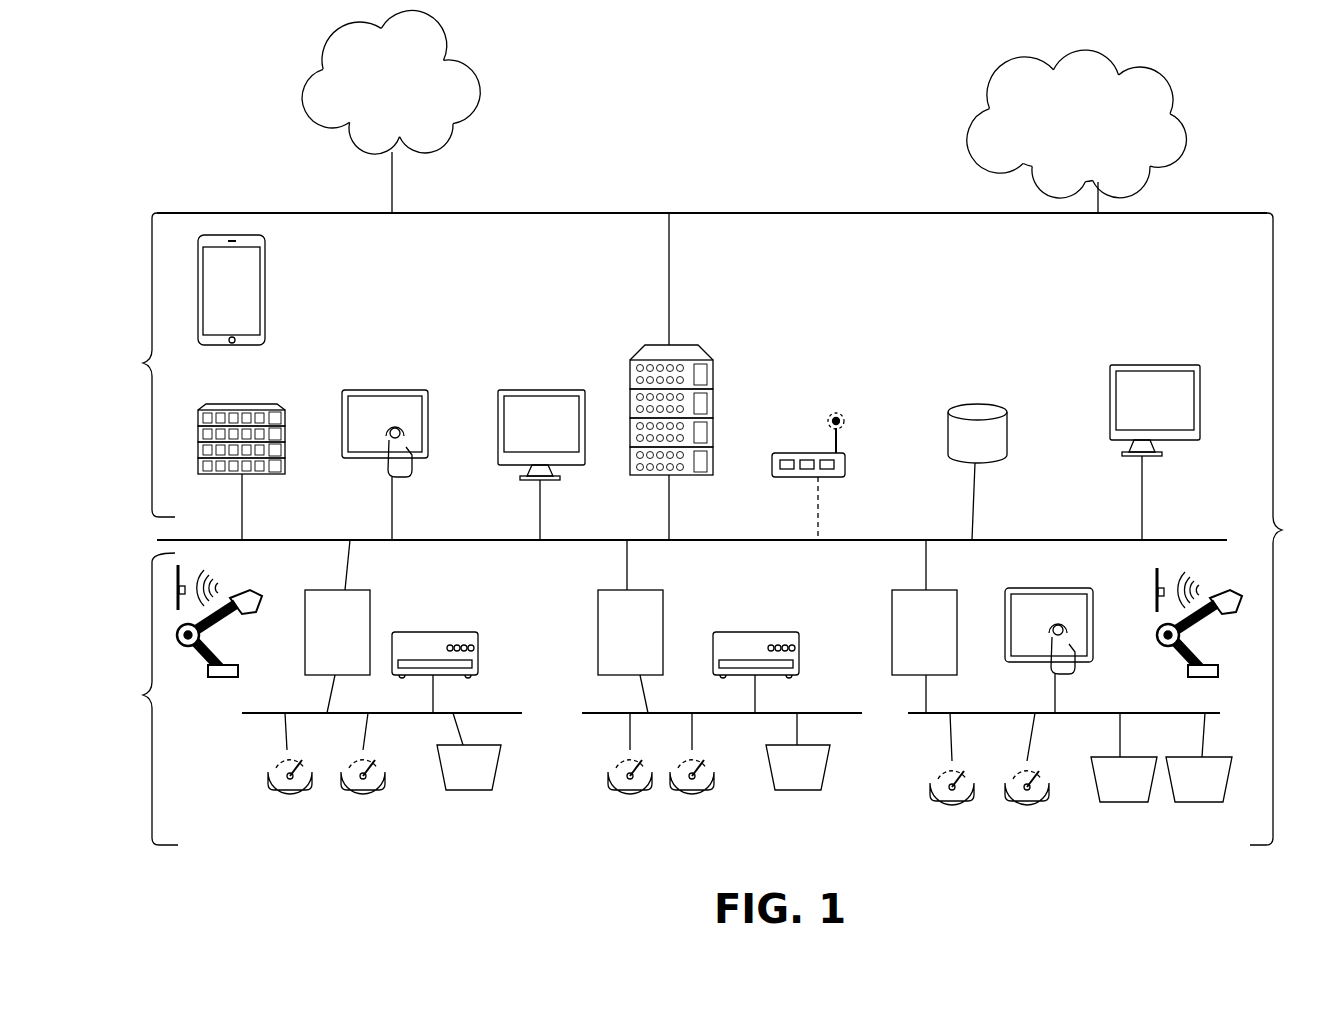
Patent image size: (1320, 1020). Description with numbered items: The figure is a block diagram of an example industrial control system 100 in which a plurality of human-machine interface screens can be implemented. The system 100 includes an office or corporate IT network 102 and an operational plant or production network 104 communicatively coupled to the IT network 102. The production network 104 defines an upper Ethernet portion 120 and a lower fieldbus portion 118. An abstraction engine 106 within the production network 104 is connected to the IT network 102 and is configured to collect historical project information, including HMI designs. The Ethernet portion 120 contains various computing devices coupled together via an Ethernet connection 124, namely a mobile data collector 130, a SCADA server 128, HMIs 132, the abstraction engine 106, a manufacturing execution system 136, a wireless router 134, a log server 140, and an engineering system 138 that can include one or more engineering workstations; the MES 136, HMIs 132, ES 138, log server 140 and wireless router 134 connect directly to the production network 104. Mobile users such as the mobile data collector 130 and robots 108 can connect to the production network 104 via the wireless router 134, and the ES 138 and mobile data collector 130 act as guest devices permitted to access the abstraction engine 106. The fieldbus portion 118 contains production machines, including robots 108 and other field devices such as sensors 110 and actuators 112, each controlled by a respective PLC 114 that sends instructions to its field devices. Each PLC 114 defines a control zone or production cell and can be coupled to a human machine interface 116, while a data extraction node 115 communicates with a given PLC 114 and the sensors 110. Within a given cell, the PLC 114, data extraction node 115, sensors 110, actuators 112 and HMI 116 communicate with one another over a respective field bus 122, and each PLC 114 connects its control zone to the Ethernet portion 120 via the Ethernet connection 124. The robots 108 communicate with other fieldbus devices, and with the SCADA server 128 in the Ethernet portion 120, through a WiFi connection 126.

The industrial control system 100 is at (931, 70).
The IT network 102 is at (1150, 144).
The production network 104 is at (1285, 529).
The abstraction engine 106 is at (715, 388).
The robots 108 is at (190, 648).
The sensors 110 is at (293, 790).
The actuators 112 is at (470, 790).
The PLC 114 is at (370, 605).
The data extraction node 115 is at (470, 636).
The human machine interface 116 is at (1023, 605).
The fieldbus portion 118 is at (137, 699).
The Ethernet portion 120 is at (135, 365).
The field bus 122 is at (510, 712).
The Ethernet connection 124 is at (862, 540).
The WiFi connection 126 is at (172, 572).
The SCADA server 128 is at (218, 410).
The mobile data collector 130 is at (240, 278).
The HMIs 132 is at (340, 410).
The wireless router 134 is at (843, 410).
The manufacturing execution system 136 is at (512, 388).
The engineering system 138 is at (1155, 452).
The log server 140 is at (970, 420).